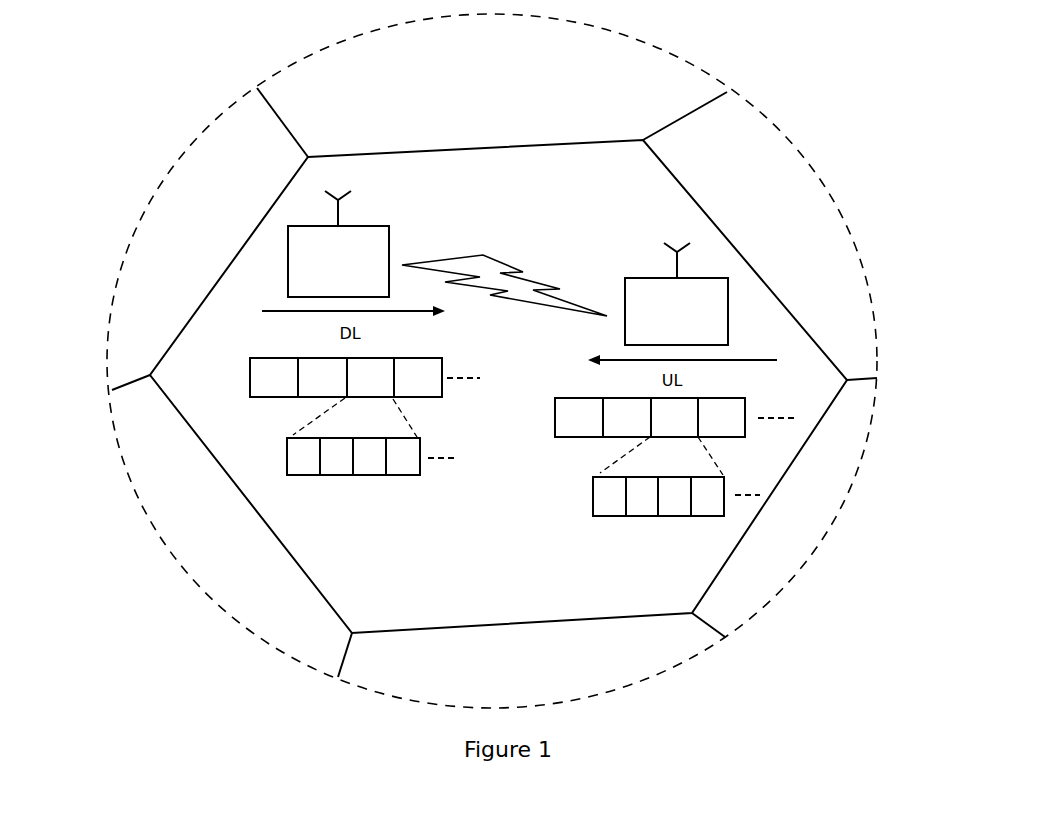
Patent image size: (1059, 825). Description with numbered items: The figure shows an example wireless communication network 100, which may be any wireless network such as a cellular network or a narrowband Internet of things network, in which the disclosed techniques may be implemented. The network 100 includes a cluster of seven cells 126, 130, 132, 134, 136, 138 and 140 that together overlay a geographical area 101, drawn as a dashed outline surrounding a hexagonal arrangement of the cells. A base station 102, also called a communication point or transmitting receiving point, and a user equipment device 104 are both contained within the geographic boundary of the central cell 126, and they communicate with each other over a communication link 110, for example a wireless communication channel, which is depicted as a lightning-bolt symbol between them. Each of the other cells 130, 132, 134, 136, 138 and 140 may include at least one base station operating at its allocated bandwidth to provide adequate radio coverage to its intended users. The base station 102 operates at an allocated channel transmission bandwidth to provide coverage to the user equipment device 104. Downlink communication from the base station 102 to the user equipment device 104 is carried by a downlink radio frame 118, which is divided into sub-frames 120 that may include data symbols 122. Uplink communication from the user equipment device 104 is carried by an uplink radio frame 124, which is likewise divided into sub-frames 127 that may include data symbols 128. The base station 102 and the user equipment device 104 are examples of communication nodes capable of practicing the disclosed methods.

The wireless communication network 100 is at (533, 368).
The geographical area 101 is at (128, 250).
The base station 102 is at (321, 286).
The user equipment device 104 is at (660, 334).
The communication link 110 is at (495, 263).
The downlink radio frame 118 is at (257, 378).
The sub-frame 120 is at (290, 467).
The data symbol 122 is at (372, 472).
The uplink radio frame 124 is at (562, 418).
The cell 126 is at (500, 598).
The sub-frame 127 is at (596, 506).
The data symbol 128 is at (677, 512).
The cell 130 is at (175, 244).
The cell 132 is at (478, 103).
The cell 134 is at (765, 241).
The cell 136 is at (778, 534).
The cell 138 is at (515, 673).
The cell 140 is at (193, 544).